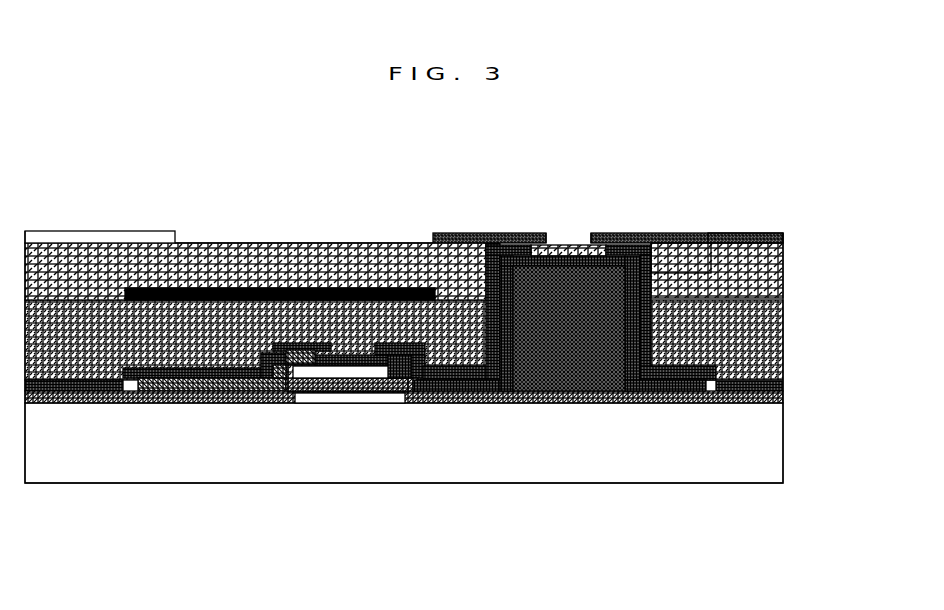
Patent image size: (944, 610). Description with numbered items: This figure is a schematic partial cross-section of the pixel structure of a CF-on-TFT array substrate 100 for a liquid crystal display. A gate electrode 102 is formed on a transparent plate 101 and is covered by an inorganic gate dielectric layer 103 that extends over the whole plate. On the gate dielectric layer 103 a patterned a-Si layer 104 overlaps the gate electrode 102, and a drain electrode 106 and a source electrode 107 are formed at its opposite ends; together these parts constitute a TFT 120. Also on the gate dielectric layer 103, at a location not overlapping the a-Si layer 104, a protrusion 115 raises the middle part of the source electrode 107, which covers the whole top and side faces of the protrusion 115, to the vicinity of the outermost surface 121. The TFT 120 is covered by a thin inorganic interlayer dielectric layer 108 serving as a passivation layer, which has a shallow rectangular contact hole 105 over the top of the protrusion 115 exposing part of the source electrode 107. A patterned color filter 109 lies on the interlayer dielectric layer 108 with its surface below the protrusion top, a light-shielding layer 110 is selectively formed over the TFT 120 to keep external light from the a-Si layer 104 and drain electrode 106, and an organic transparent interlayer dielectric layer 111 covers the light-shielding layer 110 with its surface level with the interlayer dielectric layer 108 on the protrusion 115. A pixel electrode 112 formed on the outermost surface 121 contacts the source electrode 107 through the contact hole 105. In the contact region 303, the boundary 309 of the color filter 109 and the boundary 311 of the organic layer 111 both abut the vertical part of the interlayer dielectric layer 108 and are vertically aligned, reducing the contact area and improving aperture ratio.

The substrate 100 is at (689, 492).
The transparent plate 101 is at (767, 457).
The gate electrode 102 is at (337, 390).
The gate dielectric layer 103 is at (765, 386).
The a-Si layer 104 is at (365, 385).
The contact hole 105 is at (568, 233).
The drain electrode 106 is at (180, 383).
The source electrode 107 is at (660, 395).
The interlayer dielectric layer 108 is at (768, 371).
The color filter 109 is at (760, 330).
The light-shielding layer 110 is at (226, 280).
The organic transparent interlayer dielectric layer 111 is at (760, 265).
The pixel electrode 112 is at (750, 229).
The protrusion 115 is at (535, 383).
The TFT 120 is at (346, 404).
The outermost surface 121 is at (353, 237).
The contact region 303 is at (513, 213).
The boundary of the color filter 309 is at (676, 262).
The boundary of the organic interlayer dielectric layer 311 is at (745, 202).